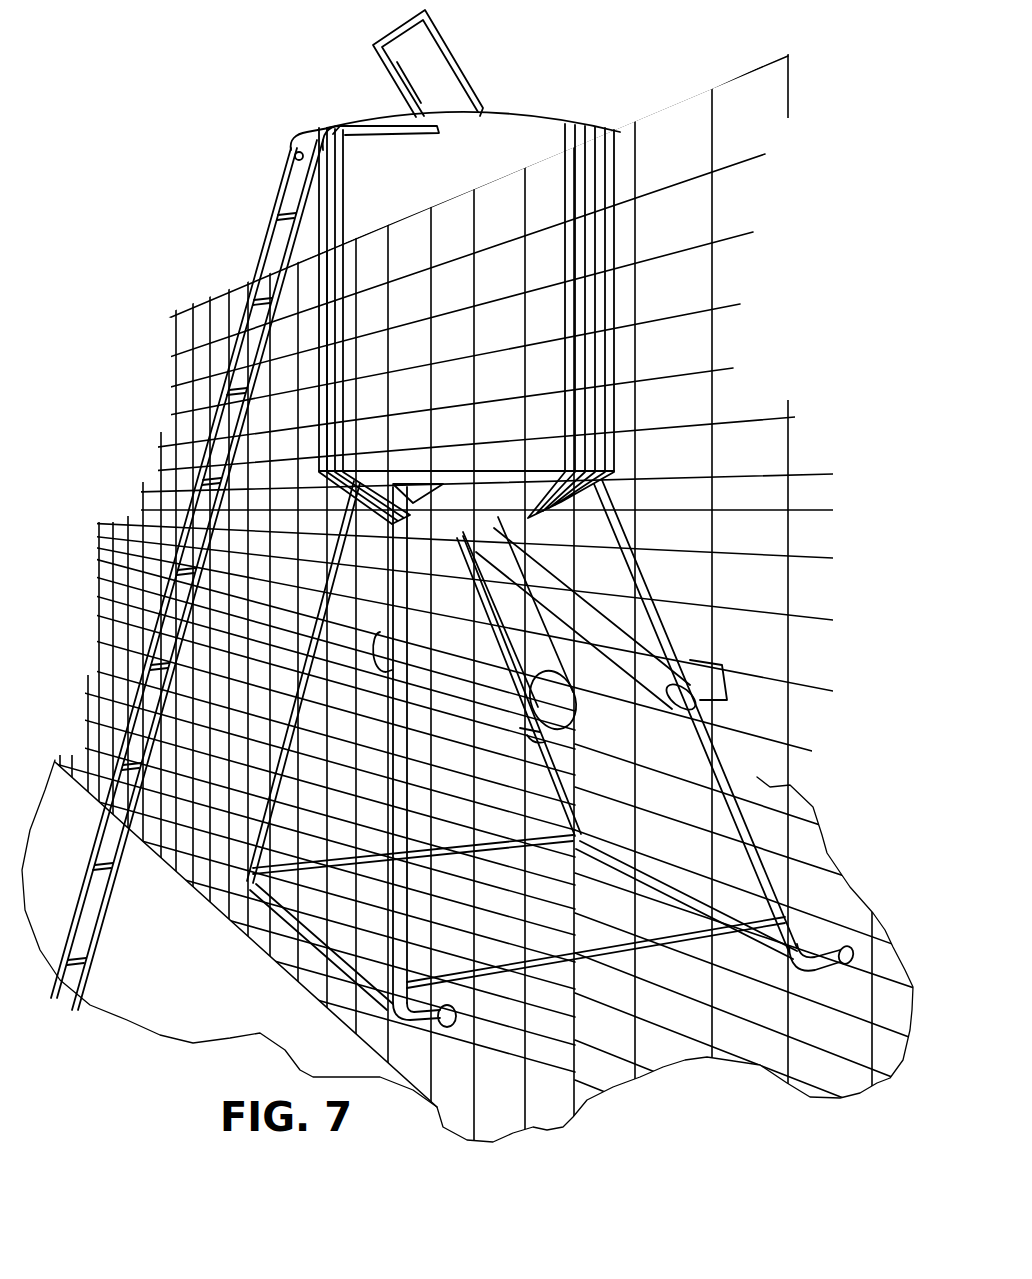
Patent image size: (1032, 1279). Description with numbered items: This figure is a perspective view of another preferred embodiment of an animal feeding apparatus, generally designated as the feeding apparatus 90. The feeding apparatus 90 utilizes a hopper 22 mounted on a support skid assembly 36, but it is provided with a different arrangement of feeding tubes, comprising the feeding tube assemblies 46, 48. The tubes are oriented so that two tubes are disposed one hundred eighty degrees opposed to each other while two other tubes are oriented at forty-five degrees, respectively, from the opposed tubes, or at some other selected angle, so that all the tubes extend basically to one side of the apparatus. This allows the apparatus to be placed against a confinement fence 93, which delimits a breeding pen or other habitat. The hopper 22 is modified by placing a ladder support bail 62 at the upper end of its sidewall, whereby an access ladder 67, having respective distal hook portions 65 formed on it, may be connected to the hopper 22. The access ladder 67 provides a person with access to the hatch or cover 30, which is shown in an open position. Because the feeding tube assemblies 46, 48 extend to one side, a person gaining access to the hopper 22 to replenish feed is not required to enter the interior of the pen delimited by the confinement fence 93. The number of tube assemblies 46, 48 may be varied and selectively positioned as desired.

The hopper 22 is at (586, 116).
The hatch or cover 30 is at (460, 62).
The support skid assembly 36 is at (763, 962).
The feeding tube assembly 46 is at (478, 634).
The feeding tube assembly 48 is at (412, 720).
The ladder support bail 62 is at (360, 125).
The distal hook portions 65 is at (296, 142).
The access ladder 67 is at (265, 238).
The feeding apparatus 90 is at (532, 96).
The confinement fence 93 is at (197, 300).